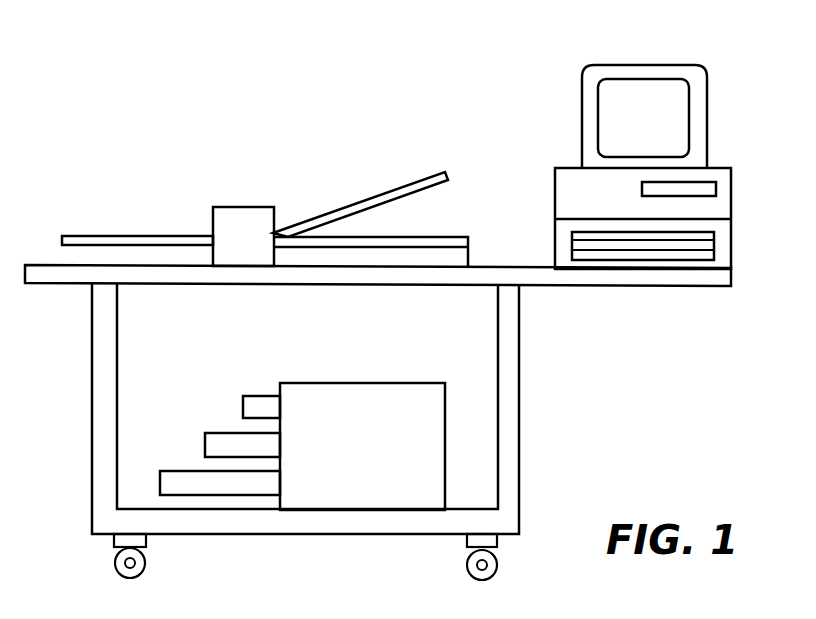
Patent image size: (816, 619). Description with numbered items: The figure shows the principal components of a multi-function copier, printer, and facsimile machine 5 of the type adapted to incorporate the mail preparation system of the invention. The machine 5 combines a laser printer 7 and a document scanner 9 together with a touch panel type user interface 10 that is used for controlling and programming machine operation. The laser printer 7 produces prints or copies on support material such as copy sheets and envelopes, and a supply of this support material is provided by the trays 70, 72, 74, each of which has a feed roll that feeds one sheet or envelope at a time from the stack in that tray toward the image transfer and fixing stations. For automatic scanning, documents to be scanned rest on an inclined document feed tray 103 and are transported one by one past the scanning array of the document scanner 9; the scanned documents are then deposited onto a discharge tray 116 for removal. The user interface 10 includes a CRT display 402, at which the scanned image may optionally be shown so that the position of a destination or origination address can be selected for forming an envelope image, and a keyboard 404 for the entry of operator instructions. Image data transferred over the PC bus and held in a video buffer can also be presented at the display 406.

The user interface 10 is at (577, 53).
The CRT display 402 is at (613, 118).
The display 406 is at (705, 187).
The keyboard 404 is at (653, 250).
The multi-function copier, printer, and facsimile machine 5 is at (550, 351).
The laser printer 7 is at (374, 376).
The tray 70 is at (243, 403).
The tray 72 is at (205, 442).
The tray 74 is at (160, 472).
The document scanner 9 is at (231, 193).
The discharge tray 116 is at (132, 236).
The inclined document feed tray 103 is at (410, 195).